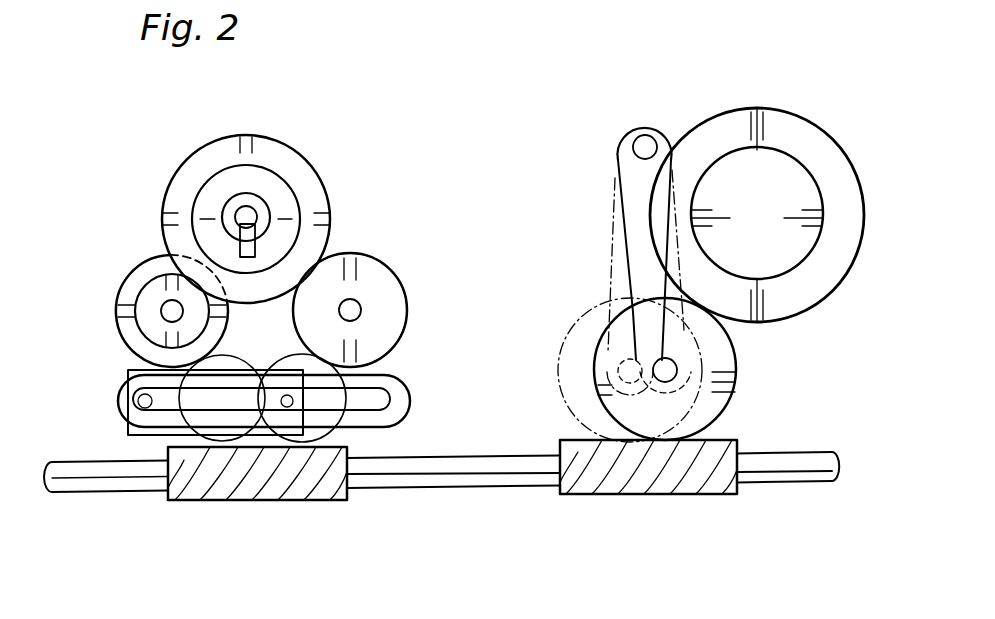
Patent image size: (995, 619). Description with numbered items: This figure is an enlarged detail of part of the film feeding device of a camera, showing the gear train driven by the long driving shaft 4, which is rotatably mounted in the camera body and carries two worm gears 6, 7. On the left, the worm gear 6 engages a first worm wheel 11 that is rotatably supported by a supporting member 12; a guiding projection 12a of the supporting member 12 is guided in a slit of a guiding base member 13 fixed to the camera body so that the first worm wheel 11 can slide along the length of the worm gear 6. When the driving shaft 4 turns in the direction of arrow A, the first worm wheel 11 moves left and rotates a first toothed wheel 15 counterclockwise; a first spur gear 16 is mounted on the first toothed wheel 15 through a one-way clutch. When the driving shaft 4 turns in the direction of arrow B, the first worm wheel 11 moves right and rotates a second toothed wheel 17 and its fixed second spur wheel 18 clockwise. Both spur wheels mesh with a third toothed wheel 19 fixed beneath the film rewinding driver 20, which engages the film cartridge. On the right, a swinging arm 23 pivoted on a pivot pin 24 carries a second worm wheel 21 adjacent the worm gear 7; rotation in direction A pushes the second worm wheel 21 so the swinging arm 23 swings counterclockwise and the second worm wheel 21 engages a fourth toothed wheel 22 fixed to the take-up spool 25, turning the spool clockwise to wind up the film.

The driving shaft 4 is at (85, 480).
The worm gear 6 is at (303, 492).
The worm gear 7 is at (672, 486).
The first worm wheel 11 is at (193, 442).
The supporting member 12 is at (128, 372).
The guiding projection 12a is at (138, 402).
The guiding base member 13 is at (120, 390).
The first toothed wheel 15 is at (140, 268).
The first spur gear 16 is at (160, 266).
The second toothed wheel 17 is at (364, 258).
The second spur wheel 18 is at (371, 280).
The third toothed wheel 19 is at (305, 182).
The film rewinding driver 20 is at (252, 205).
The second worm wheel 21 is at (730, 370).
The fourth toothed wheel 22 is at (816, 284).
The swinging arm 23 is at (633, 172).
The pivot pin 24 is at (647, 140).
The take-up spool 25 is at (783, 195).
The arrow A is at (461, 438).
The arrow B is at (413, 443).